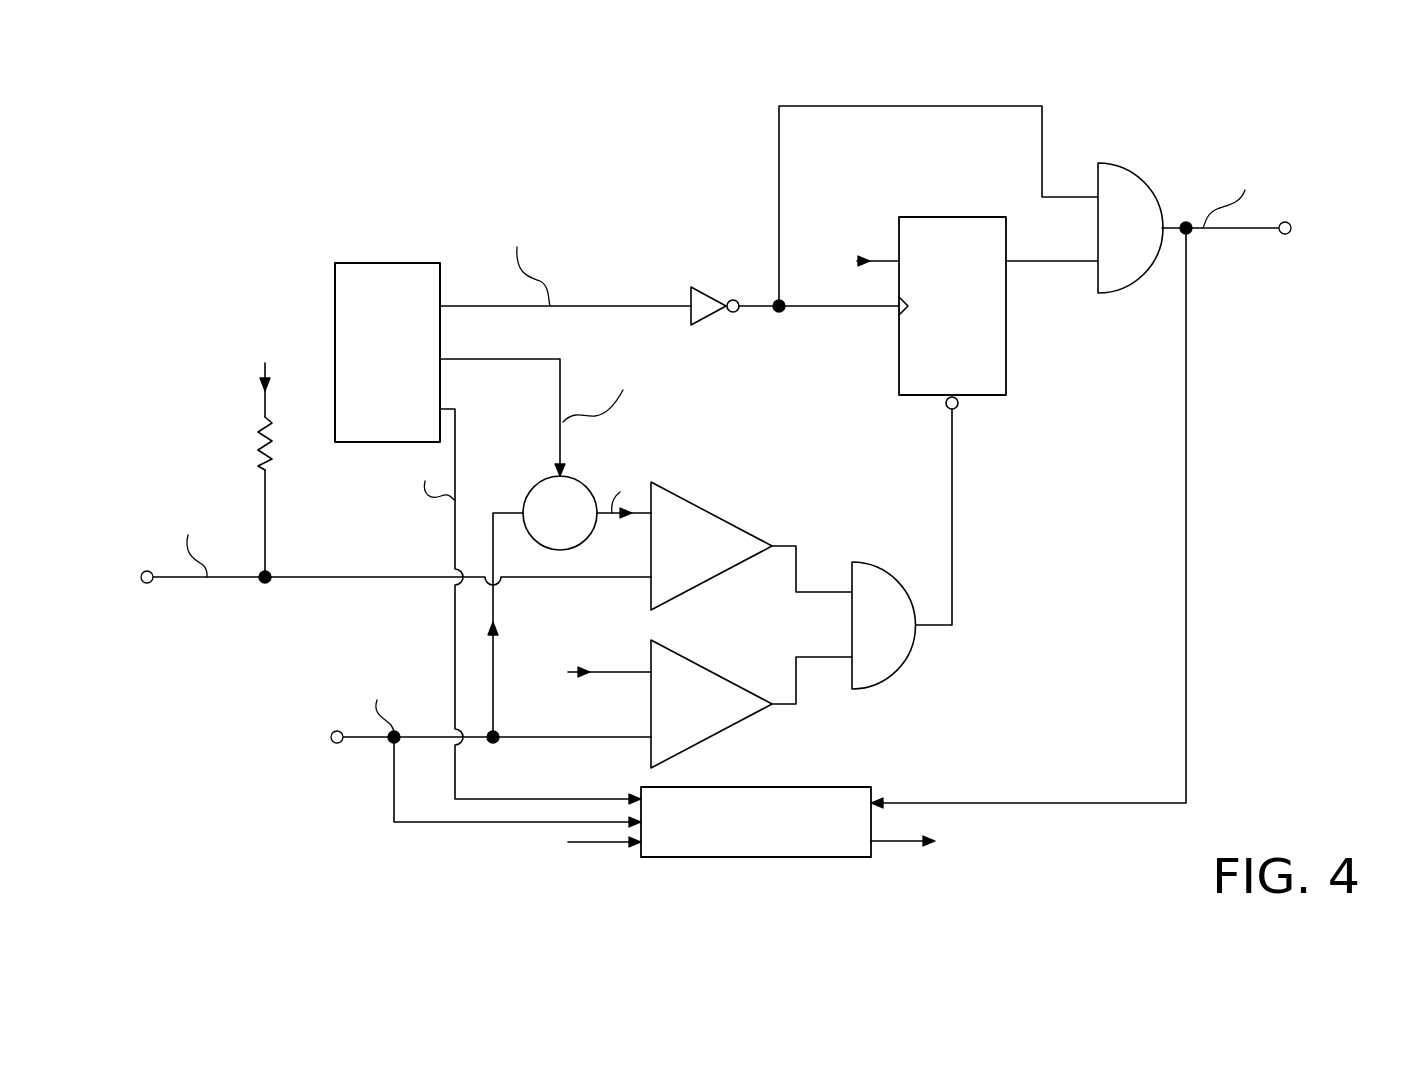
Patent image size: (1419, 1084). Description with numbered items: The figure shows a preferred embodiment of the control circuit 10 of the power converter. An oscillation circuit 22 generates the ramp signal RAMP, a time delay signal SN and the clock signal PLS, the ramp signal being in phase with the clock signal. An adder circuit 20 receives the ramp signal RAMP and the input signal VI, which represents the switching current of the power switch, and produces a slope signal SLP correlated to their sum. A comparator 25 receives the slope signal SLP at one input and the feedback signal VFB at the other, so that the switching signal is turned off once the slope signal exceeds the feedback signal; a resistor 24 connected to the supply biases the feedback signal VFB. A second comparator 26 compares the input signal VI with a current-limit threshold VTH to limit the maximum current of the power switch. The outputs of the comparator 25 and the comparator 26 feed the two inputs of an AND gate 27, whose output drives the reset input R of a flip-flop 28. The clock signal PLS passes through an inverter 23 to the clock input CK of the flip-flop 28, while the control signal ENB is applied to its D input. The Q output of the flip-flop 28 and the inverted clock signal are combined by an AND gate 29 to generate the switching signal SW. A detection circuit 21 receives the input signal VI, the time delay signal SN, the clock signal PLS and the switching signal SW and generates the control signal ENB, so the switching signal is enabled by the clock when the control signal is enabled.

The control circuit 10 is at (1366, 157).
The adder circuit 20 is at (535, 492).
The detection circuit 21 is at (731, 839).
The oscillation circuit 22 is at (335, 262).
The inverter 23 is at (719, 290).
The resistor 24 is at (277, 447).
The comparator 25 is at (722, 519).
The comparator 26 is at (722, 676).
The AND gate 27 is at (885, 568).
The flip-flop 28 is at (900, 217).
The AND gate 29 is at (1138, 176).